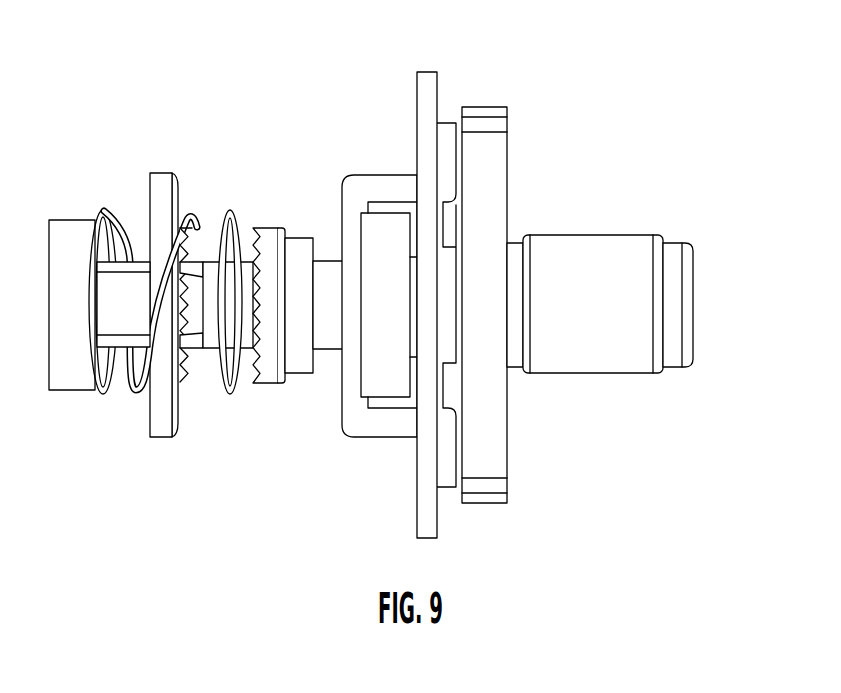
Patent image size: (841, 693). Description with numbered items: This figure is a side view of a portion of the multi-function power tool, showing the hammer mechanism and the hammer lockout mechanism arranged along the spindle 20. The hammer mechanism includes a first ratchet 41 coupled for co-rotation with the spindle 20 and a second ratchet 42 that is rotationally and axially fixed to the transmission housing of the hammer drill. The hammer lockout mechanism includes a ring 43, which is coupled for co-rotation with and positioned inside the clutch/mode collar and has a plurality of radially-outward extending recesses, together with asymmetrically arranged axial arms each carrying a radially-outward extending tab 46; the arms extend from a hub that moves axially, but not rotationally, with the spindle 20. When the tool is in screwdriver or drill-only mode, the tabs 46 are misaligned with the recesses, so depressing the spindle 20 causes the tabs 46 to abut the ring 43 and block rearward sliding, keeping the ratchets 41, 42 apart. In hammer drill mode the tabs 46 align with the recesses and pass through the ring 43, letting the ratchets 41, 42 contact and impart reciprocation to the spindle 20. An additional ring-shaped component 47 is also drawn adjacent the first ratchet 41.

The spindle 20 is at (128, 283).
The first ratchet 41 is at (271, 247).
The second ratchet 42 is at (162, 185).
The ring 43 is at (427, 100).
The radially-outward extending tab 46 is at (377, 187).
The ring 47 is at (230, 391).